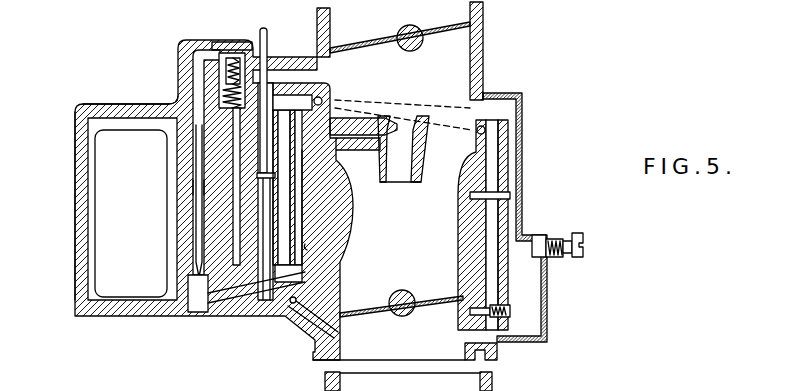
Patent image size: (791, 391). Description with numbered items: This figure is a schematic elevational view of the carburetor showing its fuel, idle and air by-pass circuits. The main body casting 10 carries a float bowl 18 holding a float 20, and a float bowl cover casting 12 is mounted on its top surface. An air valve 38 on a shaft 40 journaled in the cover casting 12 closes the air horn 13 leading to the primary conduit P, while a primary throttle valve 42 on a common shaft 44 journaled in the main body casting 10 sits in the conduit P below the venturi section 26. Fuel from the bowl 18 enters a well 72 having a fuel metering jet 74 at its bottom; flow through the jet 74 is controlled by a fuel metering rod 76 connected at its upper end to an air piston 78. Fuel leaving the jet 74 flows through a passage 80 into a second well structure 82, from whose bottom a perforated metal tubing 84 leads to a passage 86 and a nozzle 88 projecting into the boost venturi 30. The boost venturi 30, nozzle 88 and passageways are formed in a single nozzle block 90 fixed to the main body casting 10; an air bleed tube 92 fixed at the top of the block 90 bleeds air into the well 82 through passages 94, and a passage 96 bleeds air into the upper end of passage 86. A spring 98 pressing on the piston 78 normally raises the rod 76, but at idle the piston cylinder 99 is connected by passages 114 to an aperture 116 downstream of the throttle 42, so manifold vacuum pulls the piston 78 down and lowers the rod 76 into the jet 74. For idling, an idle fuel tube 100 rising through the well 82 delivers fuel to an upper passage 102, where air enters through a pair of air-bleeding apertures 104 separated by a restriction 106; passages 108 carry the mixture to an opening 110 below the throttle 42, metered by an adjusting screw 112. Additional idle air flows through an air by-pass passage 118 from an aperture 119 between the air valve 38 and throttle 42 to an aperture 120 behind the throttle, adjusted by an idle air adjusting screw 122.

The main body casting 10 is at (73, 233).
The float bowl cover casting 12 is at (110, 100).
The air horn 13 is at (484, 48).
The float bowl 18 is at (82, 289).
The float 20 is at (130, 225).
The venturi section 26 is at (452, 178).
The boost venturi 30 is at (426, 152).
The air valve 38 is at (455, 24).
The shaft 40 is at (422, 46).
The primary throttle valve 42 is at (365, 312).
The common shaft 44 is at (407, 291).
The well 72 is at (197, 147).
The fuel metering jet 74 is at (192, 263).
The fuel metering rod 76 is at (195, 188).
The air piston 78 is at (229, 45).
The passage 80 is at (233, 298).
The second well structure 82 is at (310, 248).
The perforated metal tubing 84 is at (300, 210).
The passage 86 is at (352, 130).
The nozzle 88 is at (415, 120).
The nozzle block 90 is at (322, 152).
The air bleed tube 92 is at (268, 48).
The passages 94 is at (262, 163).
The passage 96 is at (258, 122).
The spring 98 is at (226, 68).
The piston cylinder 99 is at (225, 93).
The idle fuel tube 100 is at (307, 231).
The upper passage 102 is at (310, 110).
The air-bleeding apertures 104 is at (305, 96).
The restriction 106 is at (320, 97).
The passages 108 is at (452, 111).
The opening 110 is at (470, 313).
The adjusting screw 112 is at (510, 310).
The passages 114 is at (233, 226).
The aperture 116 is at (340, 330).
The air by-pass passage 118 is at (522, 130).
The aperture 119 is at (478, 98).
The aperture 120 is at (474, 338).
The idle air adjusting screw 122 is at (577, 232).
The primary conduit P is at (466, 65).